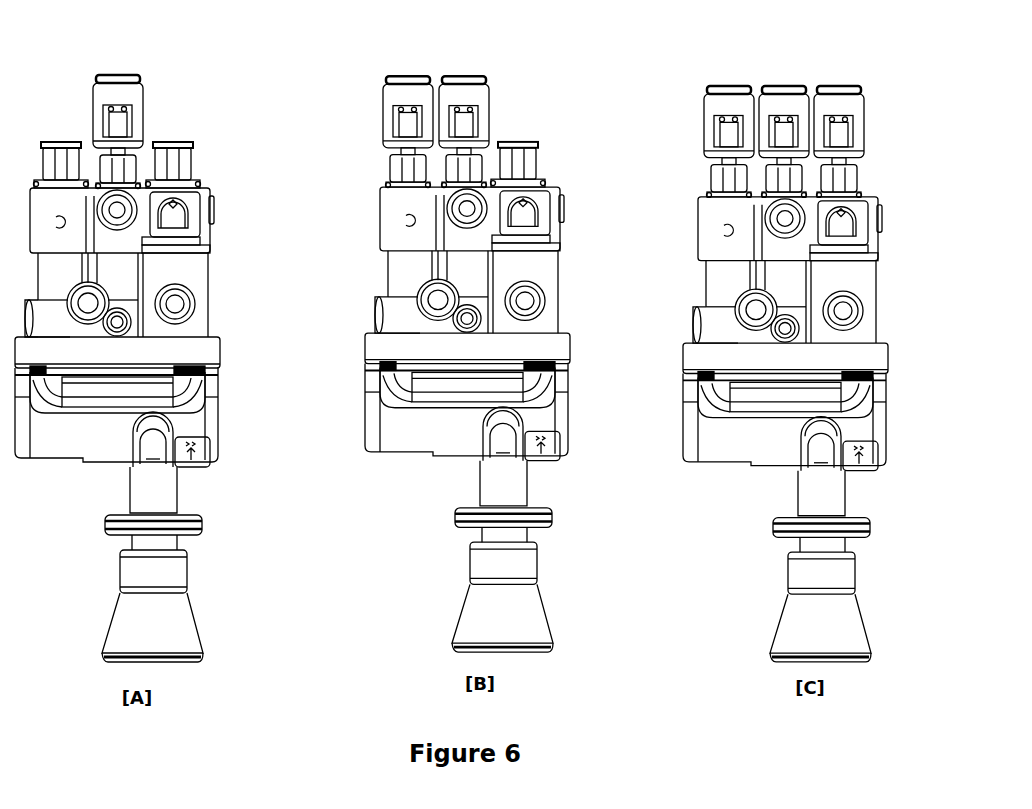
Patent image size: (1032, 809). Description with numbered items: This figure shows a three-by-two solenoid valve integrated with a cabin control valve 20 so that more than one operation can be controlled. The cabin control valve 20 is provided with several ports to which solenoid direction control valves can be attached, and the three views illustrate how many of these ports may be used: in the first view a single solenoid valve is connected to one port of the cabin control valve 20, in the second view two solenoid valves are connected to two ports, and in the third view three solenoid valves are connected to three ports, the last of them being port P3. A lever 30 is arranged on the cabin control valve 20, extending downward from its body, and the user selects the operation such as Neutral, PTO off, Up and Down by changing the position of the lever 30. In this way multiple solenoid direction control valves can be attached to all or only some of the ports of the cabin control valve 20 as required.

The cabin control valve 20 is at (702, 447).
The lever 30 is at (183, 637).
The port P3 is at (845, 197).